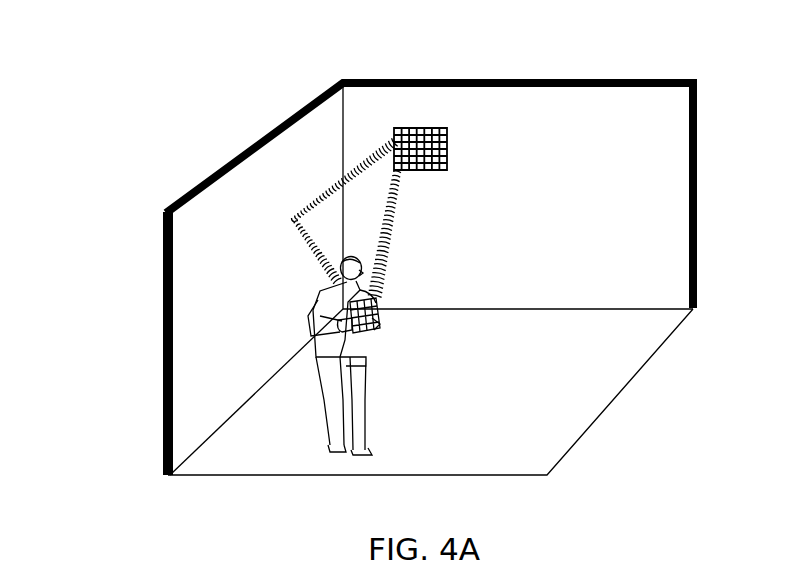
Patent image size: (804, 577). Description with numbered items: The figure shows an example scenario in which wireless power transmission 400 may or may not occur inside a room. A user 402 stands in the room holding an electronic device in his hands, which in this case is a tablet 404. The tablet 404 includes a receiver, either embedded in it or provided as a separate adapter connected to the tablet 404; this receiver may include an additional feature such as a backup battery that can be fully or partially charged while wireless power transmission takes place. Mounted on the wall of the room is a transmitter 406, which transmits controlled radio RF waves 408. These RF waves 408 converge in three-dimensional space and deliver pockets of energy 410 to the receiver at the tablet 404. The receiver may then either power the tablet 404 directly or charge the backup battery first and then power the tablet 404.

The wireless power transmission 400 is at (146, 133).
The user 402 is at (327, 298).
The tablet 404 is at (376, 308).
The transmitter 406 is at (447, 148).
The controlled Radio RF waves 408 is at (333, 192).
The pockets of energy 410 is at (378, 326).